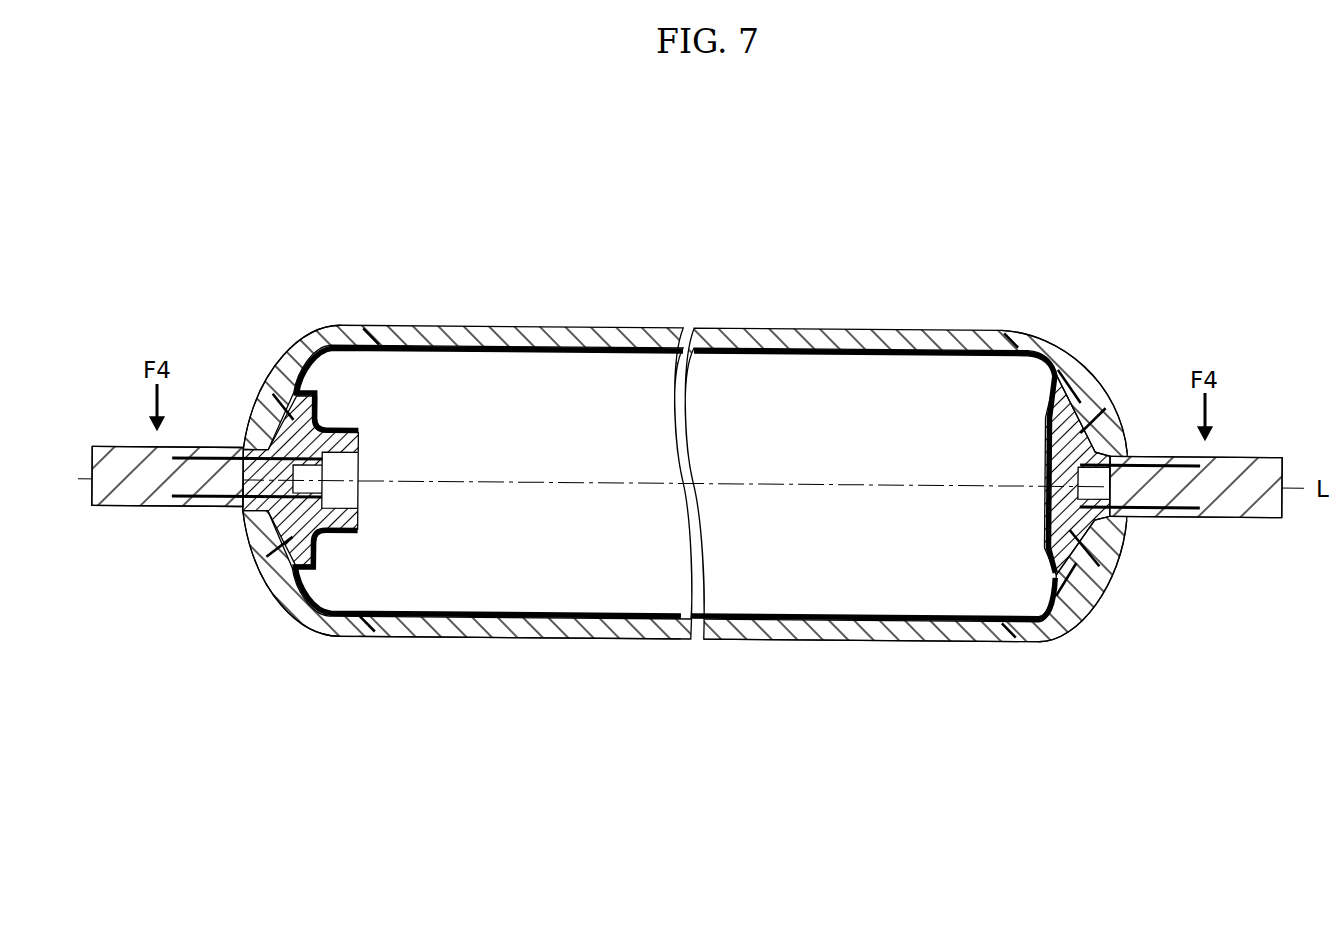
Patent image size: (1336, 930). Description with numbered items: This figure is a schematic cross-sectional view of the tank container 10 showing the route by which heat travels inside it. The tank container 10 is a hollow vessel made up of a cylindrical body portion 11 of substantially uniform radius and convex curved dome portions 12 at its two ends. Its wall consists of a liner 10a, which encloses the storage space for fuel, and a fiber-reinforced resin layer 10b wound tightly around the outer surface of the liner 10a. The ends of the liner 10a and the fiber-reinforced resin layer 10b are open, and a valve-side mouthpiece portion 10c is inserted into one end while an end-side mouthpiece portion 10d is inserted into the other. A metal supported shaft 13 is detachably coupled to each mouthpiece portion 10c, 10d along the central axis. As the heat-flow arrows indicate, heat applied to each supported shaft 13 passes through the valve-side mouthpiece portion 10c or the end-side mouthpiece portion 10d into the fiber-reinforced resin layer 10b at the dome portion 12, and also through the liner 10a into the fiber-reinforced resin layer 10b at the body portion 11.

The tank container 10 is at (484, 320).
The liner 10a is at (596, 356).
The fiber-reinforced resin layer 10b is at (621, 327).
The valve-side mouthpiece portion 10c is at (318, 531).
The end-side mouthpiece portion 10d is at (1043, 517).
The body portion 11 is at (578, 641).
The dome portion 12 is at (265, 581).
The supported shaft 13 is at (140, 493).